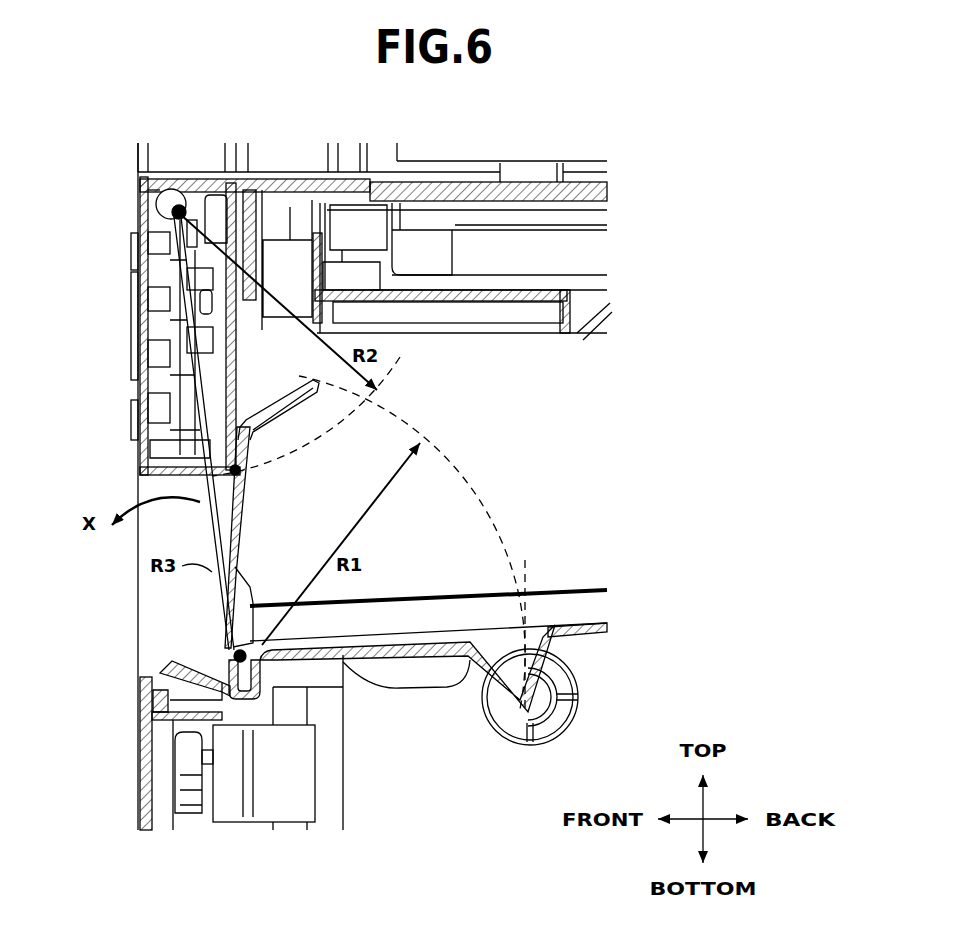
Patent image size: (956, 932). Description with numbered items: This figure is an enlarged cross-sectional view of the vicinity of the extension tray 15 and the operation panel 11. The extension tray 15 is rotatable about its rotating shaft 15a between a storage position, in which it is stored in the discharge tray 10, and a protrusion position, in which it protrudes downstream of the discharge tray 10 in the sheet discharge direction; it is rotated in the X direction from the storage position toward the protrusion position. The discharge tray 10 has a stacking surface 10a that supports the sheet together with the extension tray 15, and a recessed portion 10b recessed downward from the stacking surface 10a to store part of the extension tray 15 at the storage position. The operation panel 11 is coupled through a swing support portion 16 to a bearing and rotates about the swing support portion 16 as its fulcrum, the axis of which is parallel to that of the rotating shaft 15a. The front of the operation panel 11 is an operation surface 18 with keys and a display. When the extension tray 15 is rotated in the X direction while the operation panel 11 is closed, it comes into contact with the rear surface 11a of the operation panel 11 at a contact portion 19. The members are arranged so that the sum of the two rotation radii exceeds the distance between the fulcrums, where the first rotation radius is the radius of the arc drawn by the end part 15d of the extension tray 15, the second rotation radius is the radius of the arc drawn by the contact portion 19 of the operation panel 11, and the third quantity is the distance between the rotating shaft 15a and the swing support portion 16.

The discharge tray 10 is at (599, 617).
The stacking surface 10a is at (580, 628).
The recessed portion 10b is at (532, 640).
The operation panel 11 is at (120, 346).
The rear surface 11a is at (238, 382).
The extension tray 15 is at (207, 640).
The rotating shaft 15a is at (167, 694).
The end part 15d is at (322, 388).
The swing support portion 16 is at (156, 210).
The operation surface 18 is at (135, 393).
The contact portion 19 is at (237, 483).